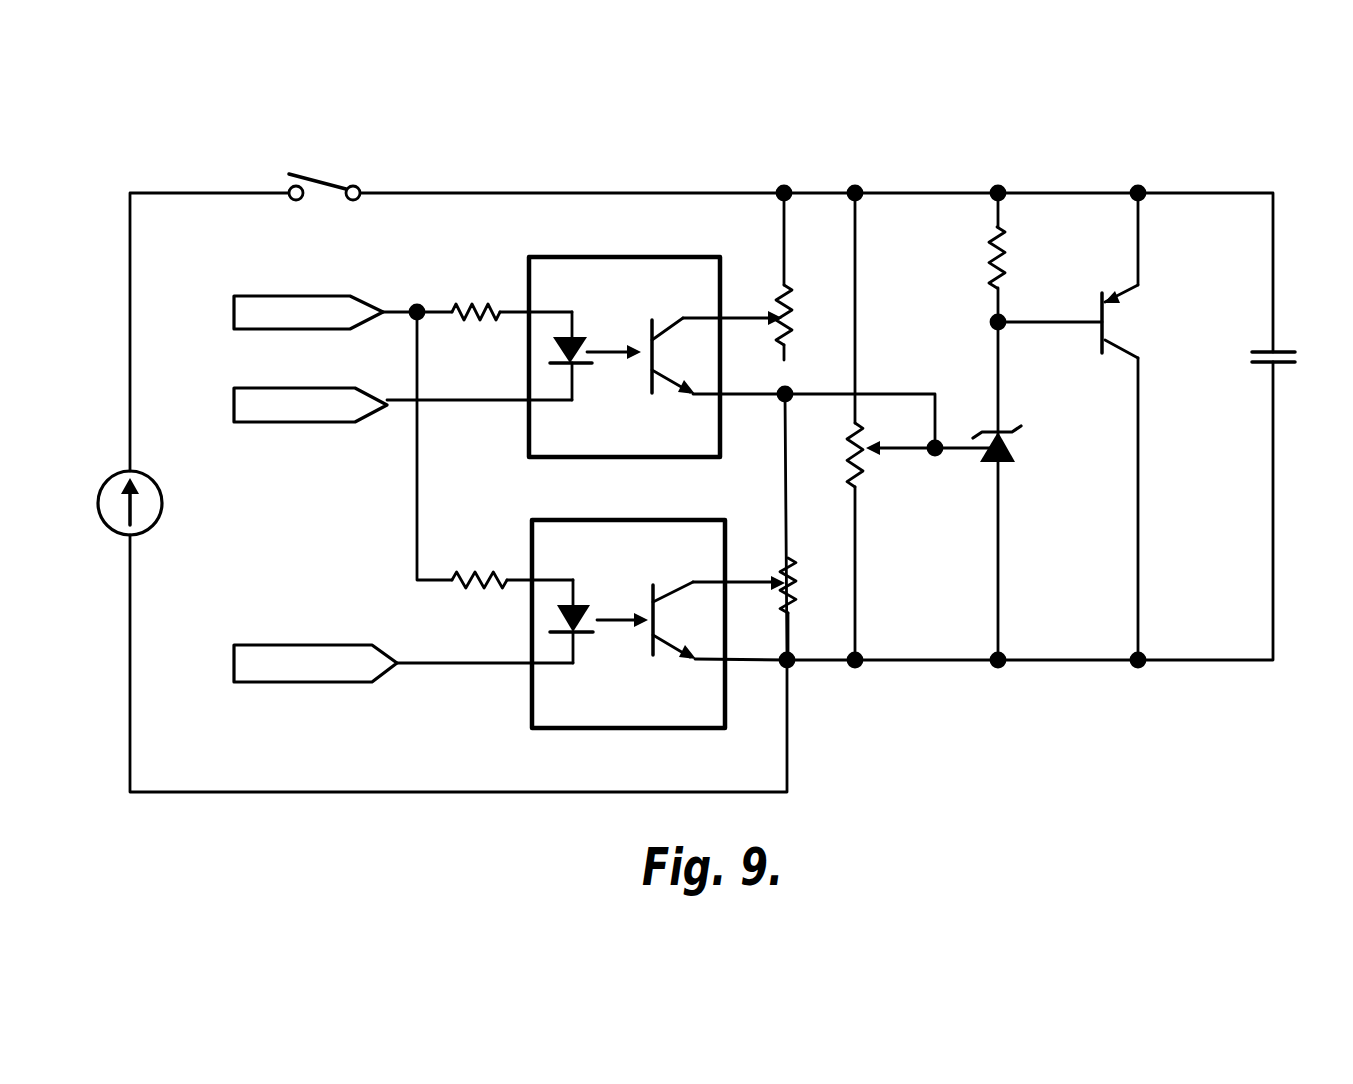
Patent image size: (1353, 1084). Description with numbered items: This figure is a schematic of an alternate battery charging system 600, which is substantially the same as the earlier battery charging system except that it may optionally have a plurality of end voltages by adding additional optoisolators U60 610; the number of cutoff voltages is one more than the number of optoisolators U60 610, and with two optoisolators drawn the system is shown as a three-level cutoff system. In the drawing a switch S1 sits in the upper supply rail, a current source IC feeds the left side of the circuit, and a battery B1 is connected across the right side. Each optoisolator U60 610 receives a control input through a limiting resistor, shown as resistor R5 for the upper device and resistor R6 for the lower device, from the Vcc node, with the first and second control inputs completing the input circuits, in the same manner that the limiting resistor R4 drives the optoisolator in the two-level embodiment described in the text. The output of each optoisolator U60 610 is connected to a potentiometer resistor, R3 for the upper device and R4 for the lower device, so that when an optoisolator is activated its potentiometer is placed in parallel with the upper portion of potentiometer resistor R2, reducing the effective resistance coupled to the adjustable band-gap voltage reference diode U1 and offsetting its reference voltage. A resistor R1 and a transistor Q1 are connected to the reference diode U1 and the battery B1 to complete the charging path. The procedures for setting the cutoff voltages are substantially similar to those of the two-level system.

The battery charging system 600 is at (257, 143).
The optoisolator U60 610 is at (586, 257).
The switch S1 is at (324, 178).
The current source IC is at (143, 503).
The resistor R1 is at (1015, 257).
The potentiometer resistor R2 is at (836, 455).
The potentiometer resistor R3 is at (801, 276).
The limiting resistor R4 is at (805, 609).
The resistor R5 is at (476, 299).
The resistor R6 is at (479, 568).
The adjustable band-gap voltage reference diode U1 is at (1011, 444).
The optoisolator U60 is at (627, 480).
The transistor Q1 is at (1135, 321).
The battery B1 is at (1289, 355).